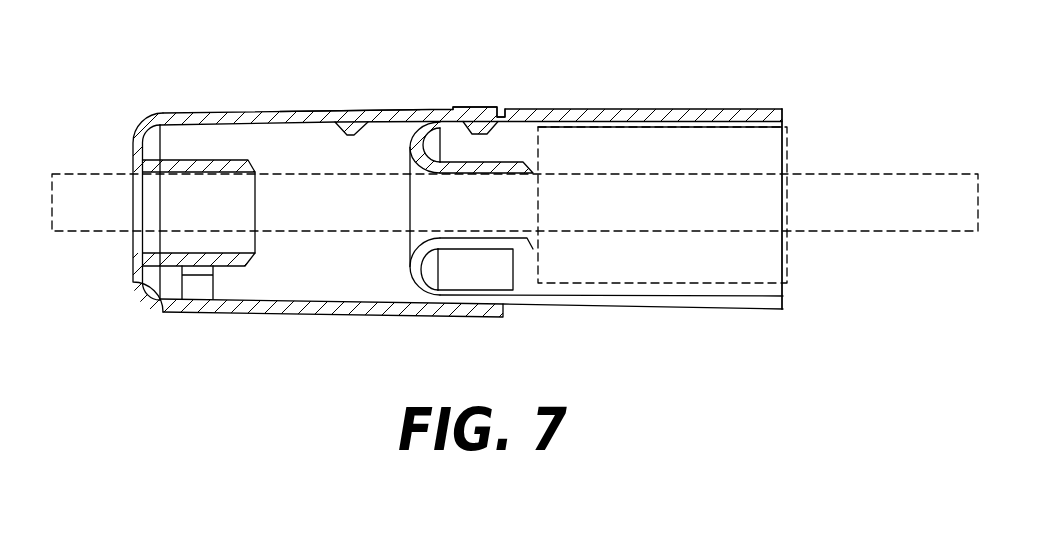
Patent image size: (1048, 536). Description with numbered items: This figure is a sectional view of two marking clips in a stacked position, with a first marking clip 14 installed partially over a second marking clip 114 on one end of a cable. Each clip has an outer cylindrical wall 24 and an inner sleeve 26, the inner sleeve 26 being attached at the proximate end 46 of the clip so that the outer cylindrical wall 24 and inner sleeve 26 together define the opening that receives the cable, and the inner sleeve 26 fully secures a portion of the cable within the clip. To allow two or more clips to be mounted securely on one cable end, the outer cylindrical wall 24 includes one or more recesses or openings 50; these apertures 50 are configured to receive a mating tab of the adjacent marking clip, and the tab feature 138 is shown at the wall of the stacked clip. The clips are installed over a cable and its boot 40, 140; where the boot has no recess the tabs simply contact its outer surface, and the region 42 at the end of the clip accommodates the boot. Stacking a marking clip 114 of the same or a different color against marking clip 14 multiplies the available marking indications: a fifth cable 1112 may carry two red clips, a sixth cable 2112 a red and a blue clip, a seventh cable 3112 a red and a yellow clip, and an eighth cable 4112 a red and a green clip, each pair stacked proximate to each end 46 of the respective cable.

The marking clip 14 is at (582, 109).
The outer cylindrical wall 24 is at (232, 112).
The inner sleeve 26 is at (237, 259).
The boot 40 is at (697, 183).
The receiving space 42 is at (798, 160).
The proximate end 46 is at (310, 204).
The recess/opening 50 is at (452, 145).
The marking clip 114 is at (303, 110).
The protrusion 138 is at (355, 123).
The boot 140 is at (767, 148).
The fifth cable 1112 is at (538, 151).
The sixth cable 2112 is at (538, 151).
The seventh cable 3112 is at (538, 151).
The eighth cable 4112 is at (902, 192).